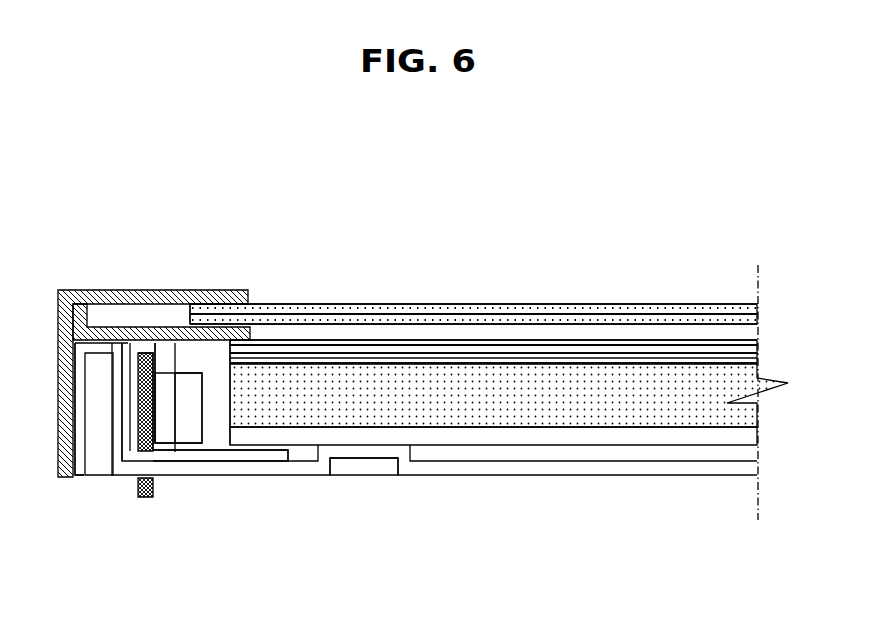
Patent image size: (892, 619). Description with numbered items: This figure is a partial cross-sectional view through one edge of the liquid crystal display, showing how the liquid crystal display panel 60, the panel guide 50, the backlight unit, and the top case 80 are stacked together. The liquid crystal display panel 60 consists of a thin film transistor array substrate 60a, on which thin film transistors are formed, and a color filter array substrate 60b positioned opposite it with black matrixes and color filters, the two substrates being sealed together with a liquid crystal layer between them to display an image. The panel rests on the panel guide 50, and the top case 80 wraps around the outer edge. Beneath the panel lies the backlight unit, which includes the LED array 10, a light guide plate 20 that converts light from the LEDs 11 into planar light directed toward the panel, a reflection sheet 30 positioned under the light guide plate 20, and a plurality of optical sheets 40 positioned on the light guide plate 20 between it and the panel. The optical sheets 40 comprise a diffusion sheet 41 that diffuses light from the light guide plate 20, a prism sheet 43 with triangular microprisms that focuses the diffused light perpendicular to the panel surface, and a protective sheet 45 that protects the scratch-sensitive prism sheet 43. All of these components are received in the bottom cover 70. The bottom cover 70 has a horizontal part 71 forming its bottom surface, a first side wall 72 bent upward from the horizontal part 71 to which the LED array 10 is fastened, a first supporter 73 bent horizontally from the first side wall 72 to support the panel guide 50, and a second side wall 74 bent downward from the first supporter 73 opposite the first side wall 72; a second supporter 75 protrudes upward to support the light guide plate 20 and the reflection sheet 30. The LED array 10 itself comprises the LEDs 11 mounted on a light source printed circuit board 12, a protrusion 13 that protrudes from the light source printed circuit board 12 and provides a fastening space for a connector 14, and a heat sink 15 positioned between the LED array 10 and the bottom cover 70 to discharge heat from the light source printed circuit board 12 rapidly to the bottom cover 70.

The LED array 10 is at (102, 182).
The LEDs 11 is at (197, 375).
The light source printed circuit board 12 is at (148, 356).
The protrusion 13 is at (158, 364).
The connector 14 is at (176, 373).
The heat sink 15 is at (131, 356).
The light guide plate 20 is at (503, 420).
The reflection sheet 30 is at (593, 437).
The optical sheets 40 is at (607, 242).
The diffusion sheet 41 is at (512, 357).
The prism sheet 43 is at (549, 351).
The protective sheet 45 is at (589, 346).
The panel guide 50 is at (110, 336).
The liquid crystal display panel 60 is at (418, 242).
The thin film transistor array substrate 60a is at (357, 322).
The color filter array substrate 60b is at (400, 313).
The bottom cover 70 is at (62, 550).
The horizontal part 71 is at (263, 468).
The first side wall 72 is at (141, 453).
The first supporter 73 is at (100, 357).
The second side wall 74 is at (80, 474).
The second supporter 75 is at (158, 463).
The top case 80 is at (70, 292).